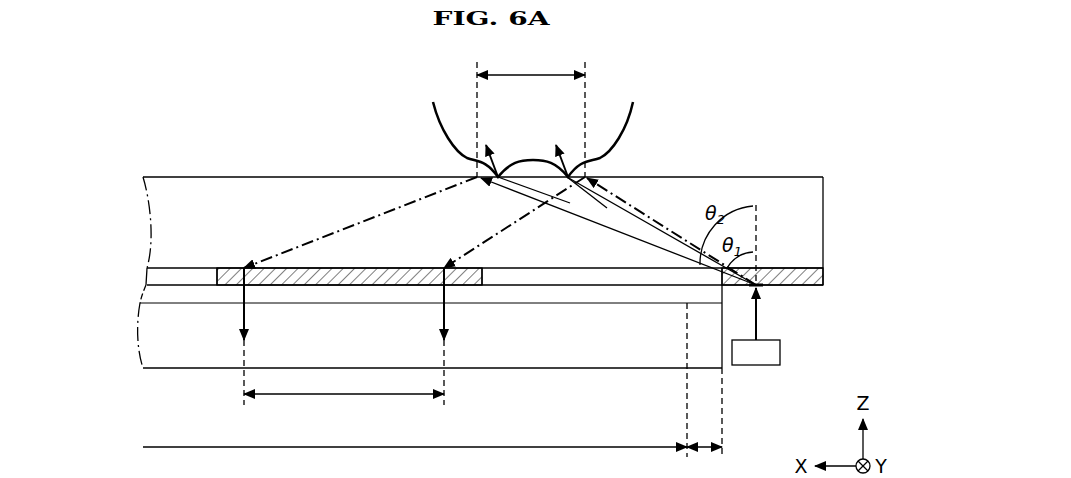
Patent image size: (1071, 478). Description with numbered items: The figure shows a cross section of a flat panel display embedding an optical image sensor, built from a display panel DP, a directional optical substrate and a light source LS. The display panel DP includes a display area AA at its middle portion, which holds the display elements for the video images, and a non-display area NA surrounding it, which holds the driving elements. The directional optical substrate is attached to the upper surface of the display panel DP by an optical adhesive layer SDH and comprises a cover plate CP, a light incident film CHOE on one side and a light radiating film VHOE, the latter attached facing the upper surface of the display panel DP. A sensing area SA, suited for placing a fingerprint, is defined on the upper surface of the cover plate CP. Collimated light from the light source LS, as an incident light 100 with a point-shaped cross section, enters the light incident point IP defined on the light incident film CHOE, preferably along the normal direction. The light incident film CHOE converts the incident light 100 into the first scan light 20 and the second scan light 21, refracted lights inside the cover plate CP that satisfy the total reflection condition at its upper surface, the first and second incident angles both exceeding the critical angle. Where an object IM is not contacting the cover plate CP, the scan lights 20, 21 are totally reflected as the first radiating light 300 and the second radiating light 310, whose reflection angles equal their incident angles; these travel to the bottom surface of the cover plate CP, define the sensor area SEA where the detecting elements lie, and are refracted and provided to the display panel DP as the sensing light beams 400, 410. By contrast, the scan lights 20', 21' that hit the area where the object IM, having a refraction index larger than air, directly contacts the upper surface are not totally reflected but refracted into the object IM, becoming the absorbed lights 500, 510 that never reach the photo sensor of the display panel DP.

The cover plate CP is at (157, 220).
The light radiating film VHOE is at (300, 275).
The light incident film CHOE is at (823, 273).
The optical adhesive layer SDH is at (148, 300).
The display panel DP is at (143, 335).
The display area AA is at (415, 459).
The non-display area NA is at (704, 460).
The sensor area SEA is at (344, 379).
The sensing light beam 410 is at (243, 312).
The sensing light beam 400 is at (447, 312).
The light source LS is at (780, 352).
The incident light 100 is at (759, 320).
The light incident point IP is at (762, 290).
The second scan light 21 is at (618, 297).
The first scan light 20 is at (661, 297).
The scan light 21' is at (486, 163).
The scan light 20' is at (613, 166).
The first radiating light 300 is at (522, 222).
The second radiating light 310 is at (358, 221).
The sensing area SA is at (531, 115).
The object IM is at (432, 110).
The absorbed light 510 is at (493, 158).
The absorbed light 500 is at (566, 158).